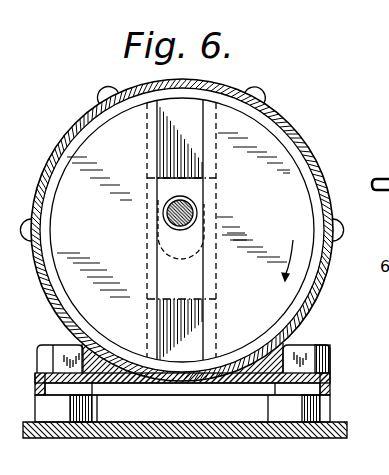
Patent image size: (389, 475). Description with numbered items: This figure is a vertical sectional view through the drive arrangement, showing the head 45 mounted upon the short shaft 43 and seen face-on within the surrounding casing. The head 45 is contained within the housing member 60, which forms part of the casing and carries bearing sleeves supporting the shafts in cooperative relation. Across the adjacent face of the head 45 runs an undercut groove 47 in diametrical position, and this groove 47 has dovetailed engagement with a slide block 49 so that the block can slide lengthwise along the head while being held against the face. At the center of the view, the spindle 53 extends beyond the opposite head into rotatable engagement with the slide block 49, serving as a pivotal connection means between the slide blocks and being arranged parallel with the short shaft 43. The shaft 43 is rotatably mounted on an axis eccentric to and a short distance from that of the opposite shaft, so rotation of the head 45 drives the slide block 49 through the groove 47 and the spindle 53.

The head 45 is at (277, 142).
The housing member 60 is at (306, 152).
The undercut groove 47 is at (163, 133).
The spindle 53 is at (197, 210).
The short shaft 43 is at (157, 255).
The slide block 49 is at (193, 273).